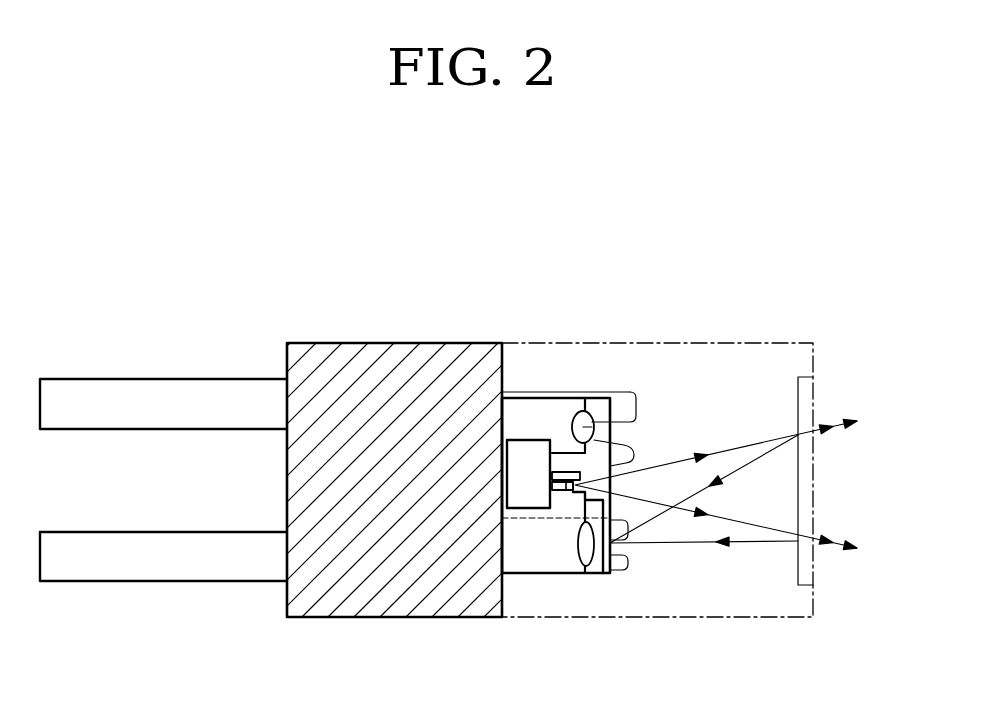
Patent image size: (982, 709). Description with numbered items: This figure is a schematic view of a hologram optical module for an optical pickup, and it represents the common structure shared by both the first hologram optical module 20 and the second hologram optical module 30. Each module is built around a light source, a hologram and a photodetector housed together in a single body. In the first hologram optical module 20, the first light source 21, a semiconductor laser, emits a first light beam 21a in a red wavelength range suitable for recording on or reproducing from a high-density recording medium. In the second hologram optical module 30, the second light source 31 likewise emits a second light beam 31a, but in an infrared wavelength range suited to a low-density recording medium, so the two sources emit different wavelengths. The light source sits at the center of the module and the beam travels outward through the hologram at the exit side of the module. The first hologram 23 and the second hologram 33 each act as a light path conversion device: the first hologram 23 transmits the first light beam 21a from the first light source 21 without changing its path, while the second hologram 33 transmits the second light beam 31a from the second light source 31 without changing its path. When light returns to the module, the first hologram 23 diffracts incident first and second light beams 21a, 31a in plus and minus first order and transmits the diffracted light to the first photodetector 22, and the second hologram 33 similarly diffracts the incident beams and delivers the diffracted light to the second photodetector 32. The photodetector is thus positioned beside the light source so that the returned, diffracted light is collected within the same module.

The first hologram optical module 20 is at (387, 400).
The second hologram optical module 30 is at (375, 308).
The first light source 21 is at (535, 566).
The second light source 31 is at (566, 492).
The first light beam 21a is at (716, 469).
The second light beam 31a is at (732, 448).
The first photodetector 22 is at (650, 550).
The second photodetector 32 is at (597, 574).
The first hologram 23 is at (696, 454).
The second hologram 33 is at (813, 472).